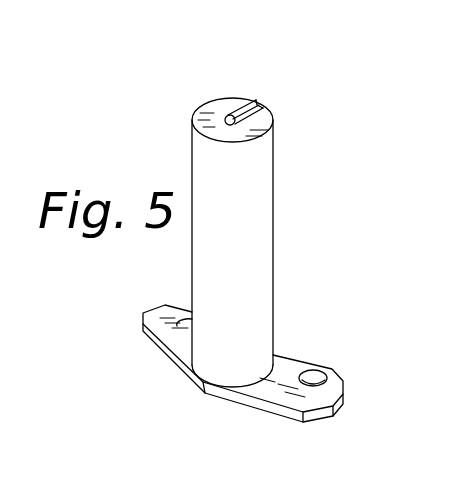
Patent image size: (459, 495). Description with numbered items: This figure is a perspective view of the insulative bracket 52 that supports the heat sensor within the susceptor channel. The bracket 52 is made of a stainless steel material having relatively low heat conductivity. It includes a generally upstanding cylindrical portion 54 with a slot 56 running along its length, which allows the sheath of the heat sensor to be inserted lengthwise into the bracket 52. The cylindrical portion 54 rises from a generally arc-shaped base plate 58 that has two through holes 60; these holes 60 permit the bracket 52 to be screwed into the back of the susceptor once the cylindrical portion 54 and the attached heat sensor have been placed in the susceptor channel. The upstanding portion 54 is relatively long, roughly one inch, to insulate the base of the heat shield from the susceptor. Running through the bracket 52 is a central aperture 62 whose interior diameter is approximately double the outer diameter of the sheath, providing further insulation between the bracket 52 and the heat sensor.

The insulative bracket 52 is at (128, 385).
The cylindrical portion 54 is at (257, 230).
The slot 56 is at (274, 97).
The base plate 58 is at (284, 368).
The through holes 60 is at (329, 380).
The central aperture 62 is at (226, 116).